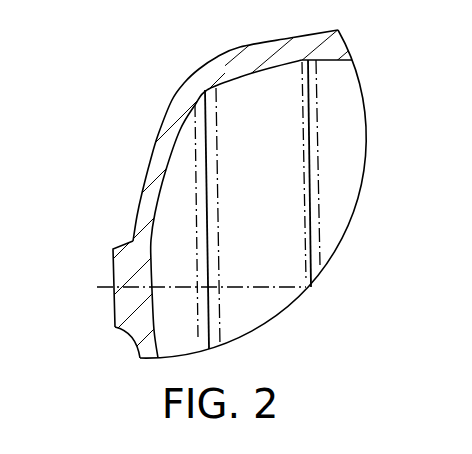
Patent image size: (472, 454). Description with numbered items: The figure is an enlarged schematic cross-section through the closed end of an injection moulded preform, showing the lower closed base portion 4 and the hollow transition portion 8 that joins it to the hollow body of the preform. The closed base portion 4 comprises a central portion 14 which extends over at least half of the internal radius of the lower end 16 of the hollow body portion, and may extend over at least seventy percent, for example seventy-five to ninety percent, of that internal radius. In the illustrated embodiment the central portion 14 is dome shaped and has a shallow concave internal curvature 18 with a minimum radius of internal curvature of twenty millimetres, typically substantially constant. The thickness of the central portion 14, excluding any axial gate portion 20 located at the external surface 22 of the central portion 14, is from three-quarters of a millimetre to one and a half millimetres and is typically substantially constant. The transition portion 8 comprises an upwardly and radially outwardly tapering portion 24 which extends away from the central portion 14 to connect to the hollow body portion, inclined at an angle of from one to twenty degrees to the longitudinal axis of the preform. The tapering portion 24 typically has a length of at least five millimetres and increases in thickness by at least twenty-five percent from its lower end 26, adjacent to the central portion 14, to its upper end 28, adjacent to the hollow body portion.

The lower closed base portion 4 is at (165, 120).
The hollow transition portion 8 is at (227, 57).
The central portion 14 is at (142, 193).
The lower end 16 is at (338, 61).
The shallow concave internal curvature 18 is at (163, 168).
The axial gate portion 20 is at (113, 272).
The external surface 22 is at (135, 346).
The tapering portion 24 is at (243, 76).
The lower end 26 is at (197, 78).
The upper end 28 is at (280, 67).